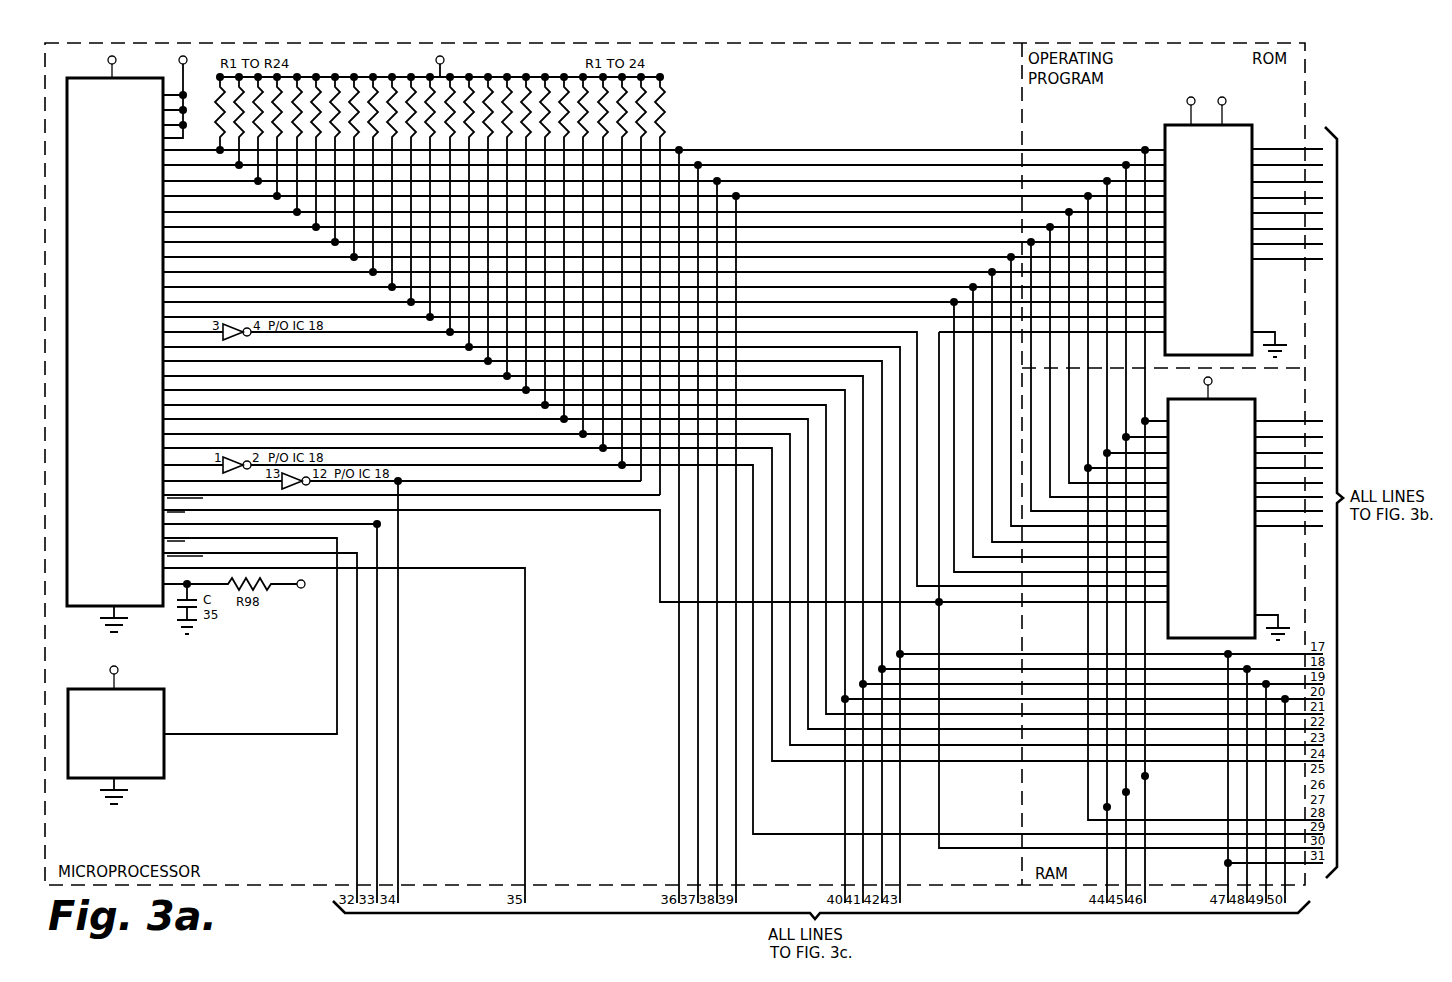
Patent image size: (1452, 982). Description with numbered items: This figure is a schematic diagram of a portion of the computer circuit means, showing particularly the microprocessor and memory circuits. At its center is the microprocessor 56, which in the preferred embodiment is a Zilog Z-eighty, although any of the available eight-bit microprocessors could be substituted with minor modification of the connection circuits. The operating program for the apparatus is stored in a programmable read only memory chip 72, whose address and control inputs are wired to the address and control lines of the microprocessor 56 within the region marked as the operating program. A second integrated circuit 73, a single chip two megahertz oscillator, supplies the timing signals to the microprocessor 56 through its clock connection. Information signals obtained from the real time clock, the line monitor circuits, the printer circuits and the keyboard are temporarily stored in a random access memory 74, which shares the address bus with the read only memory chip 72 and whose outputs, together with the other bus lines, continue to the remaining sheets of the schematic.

The microprocessor 56 is at (140, 602).
The programmable read only memory chip 72 is at (1238, 133).
The second integrated circuit 73 is at (153, 715).
The random access memory 74 is at (1240, 398).